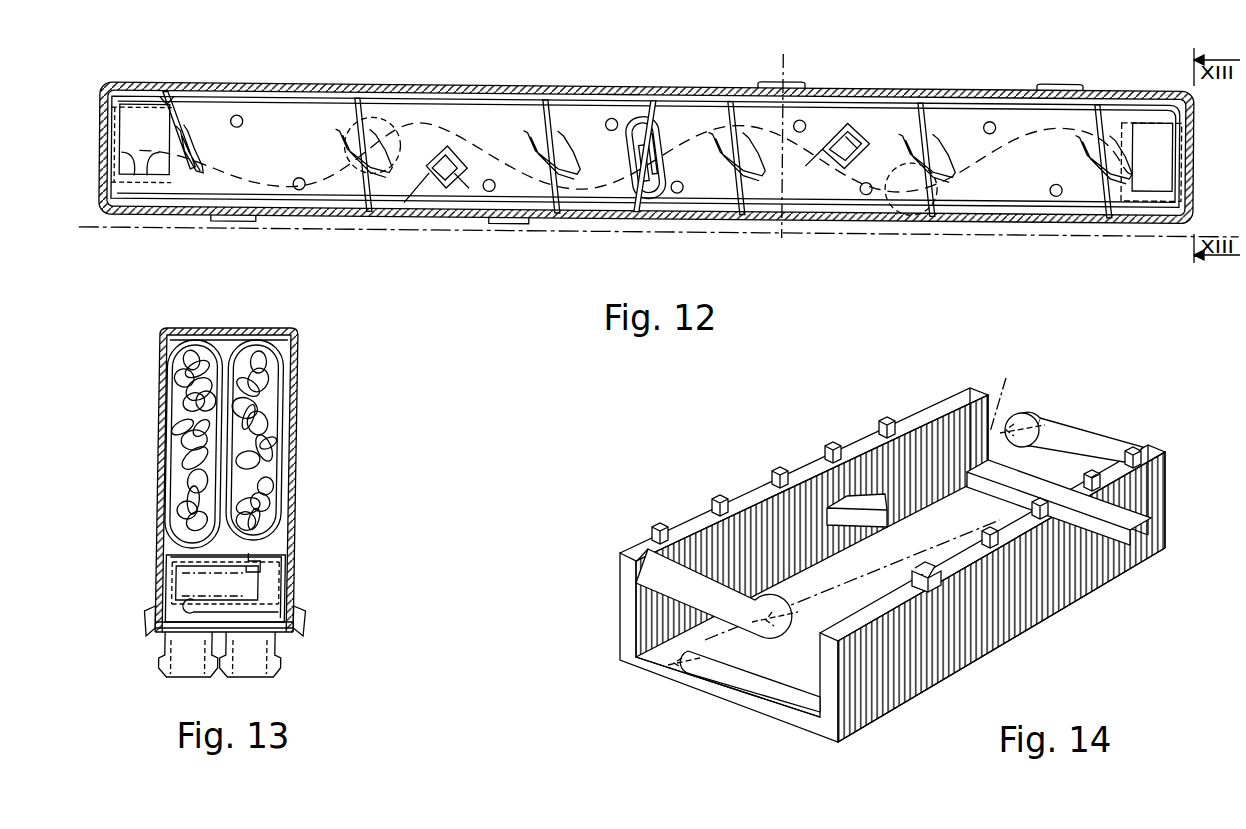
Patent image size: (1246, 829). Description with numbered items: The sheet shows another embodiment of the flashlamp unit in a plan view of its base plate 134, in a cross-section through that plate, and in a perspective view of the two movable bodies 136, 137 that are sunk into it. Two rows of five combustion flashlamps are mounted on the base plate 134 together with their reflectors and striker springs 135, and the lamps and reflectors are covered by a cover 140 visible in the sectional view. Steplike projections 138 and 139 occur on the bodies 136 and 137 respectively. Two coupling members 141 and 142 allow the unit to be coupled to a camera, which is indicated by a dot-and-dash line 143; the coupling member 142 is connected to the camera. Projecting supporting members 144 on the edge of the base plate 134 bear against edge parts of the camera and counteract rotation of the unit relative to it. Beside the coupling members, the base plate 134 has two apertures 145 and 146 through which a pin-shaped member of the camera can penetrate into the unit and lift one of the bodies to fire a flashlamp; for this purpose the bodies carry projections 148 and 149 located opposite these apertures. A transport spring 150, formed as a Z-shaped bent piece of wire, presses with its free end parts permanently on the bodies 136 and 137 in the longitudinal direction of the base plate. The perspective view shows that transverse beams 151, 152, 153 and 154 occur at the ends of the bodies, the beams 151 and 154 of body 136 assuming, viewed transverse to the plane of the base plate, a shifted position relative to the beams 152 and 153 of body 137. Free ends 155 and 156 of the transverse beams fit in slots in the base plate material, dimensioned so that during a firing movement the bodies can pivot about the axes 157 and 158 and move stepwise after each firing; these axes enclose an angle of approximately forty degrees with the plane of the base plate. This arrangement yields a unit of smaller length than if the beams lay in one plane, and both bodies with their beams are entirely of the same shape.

In FIG. 12, the base plate 134 is at (1148, 98).
In FIG. 13, the base plate 134 is at (290, 630).
In FIG. 14, the base plate 134 is at (892, 565).
In FIG. 12, the striker springs 135 is at (178, 91).
In FIG. 12, the movable body 136 is at (1017, 206).
In FIG. 13, the movable body 136 is at (258, 570).
In FIG. 14, the movable body 136 is at (937, 643).
In FIG. 12, the movable body 137 is at (994, 100).
In FIG. 13, the movable body 137 is at (282, 574).
In FIG. 14, the movable body 137 is at (627, 608).
In FIG. 12, the steplike projections 138 is at (432, 196).
In FIG. 14, the steplike projections 138 is at (1163, 463).
In FIG. 12, the steplike projections 139 is at (167, 102).
In FIG. 14, the steplike projections 139 is at (660, 524).
In FIG. 12, the cover 140 is at (604, 90).
In FIG. 13, the cover 140 is at (299, 360).
In FIG. 12, the coupling member 141 is at (893, 220).
In FIG. 13, the coupling member 141 is at (166, 664).
In FIG. 12, the coupling member 142 is at (384, 92).
In FIG. 13, the coupling member 142 is at (289, 667).
In FIG. 12, the dot-and-dash line 143 is at (298, 227).
In FIG. 12, the supporting members 144 is at (788, 80).
In FIG. 13, the supporting members 144 is at (153, 625).
In FIG. 12, the aperture 145 is at (860, 104).
In FIG. 12, the aperture 146 is at (427, 186).
In FIG. 12, the projection 148 is at (522, 222).
In FIG. 14, the projection 148 is at (942, 580).
In FIG. 12, the projection 149 is at (849, 118).
In FIG. 14, the projection 149 is at (860, 506).
In FIG. 12, the transport spring 150 is at (667, 197).
In FIG. 12, the transverse beam 151 is at (150, 165).
In FIG. 14, the transverse beam 151 is at (725, 688).
In FIG. 12, the transverse beam 152 is at (130, 165).
In FIG. 14, the transverse beam 152 is at (703, 600).
In FIG. 12, the transverse beam 153 is at (1125, 148).
In FIG. 13, the transverse beam 153 is at (254, 601).
In FIG. 14, the transverse beam 153 is at (1028, 486).
In FIG. 12, the transverse beam 154 is at (1178, 163).
In FIG. 13, the transverse beam 154 is at (215, 570).
In FIG. 14, the transverse beam 154 is at (1113, 441).
In FIG. 13, the free end 155 is at (194, 596).
In FIG. 14, the free end 155 is at (676, 670).
In FIG. 13, the free end 156 is at (264, 562).
In FIG. 14, the free end 156 is at (753, 630).
In FIG. 14, the axis 157 is at (1006, 392).
In FIG. 14, the axis 158 is at (912, 697).